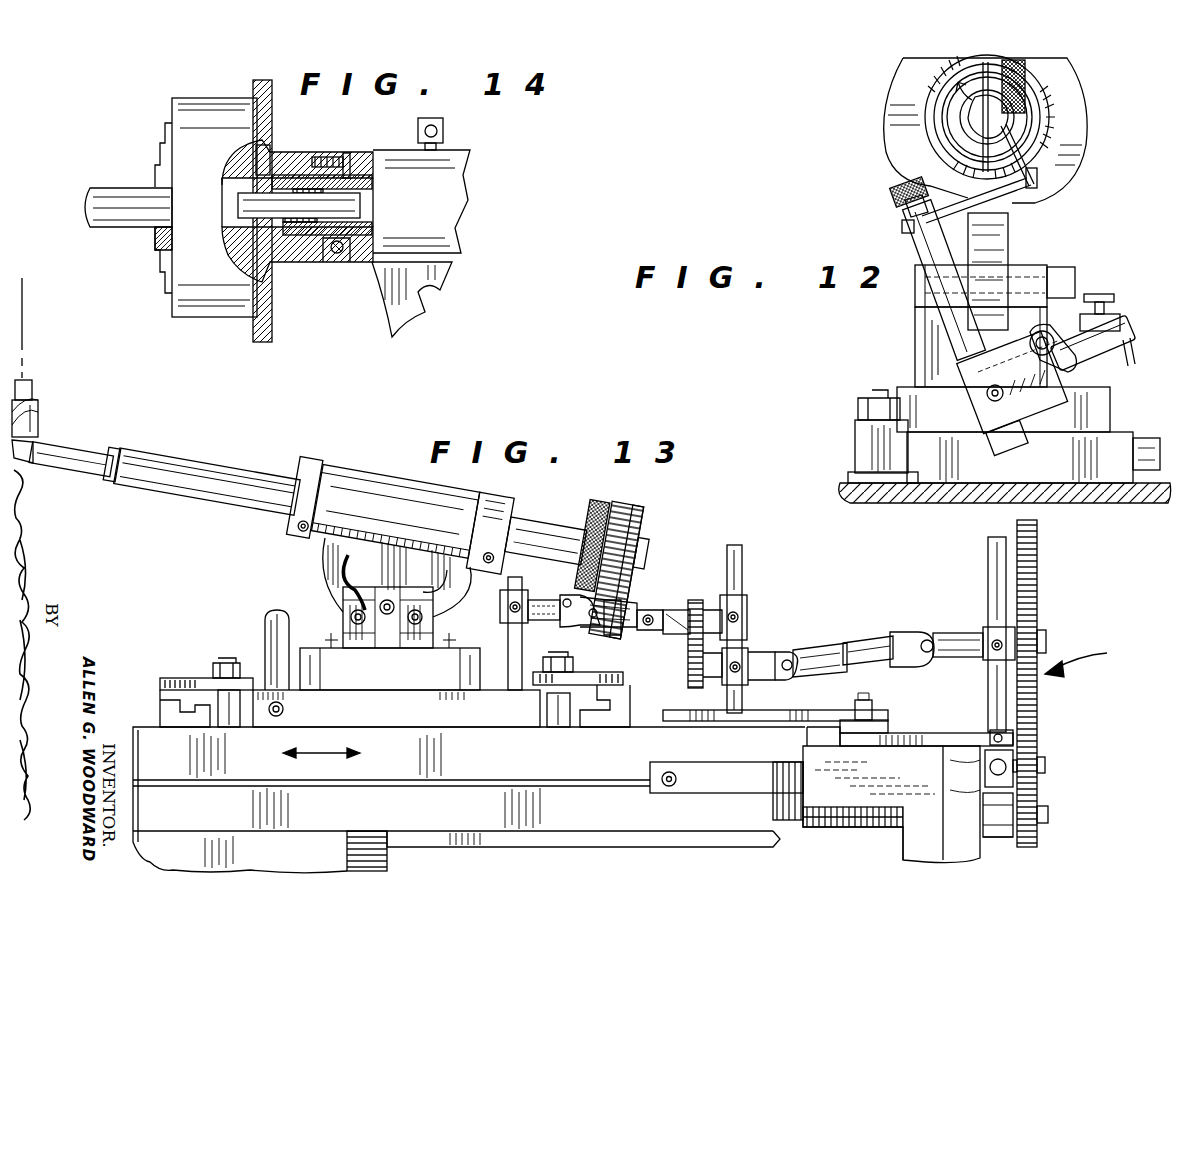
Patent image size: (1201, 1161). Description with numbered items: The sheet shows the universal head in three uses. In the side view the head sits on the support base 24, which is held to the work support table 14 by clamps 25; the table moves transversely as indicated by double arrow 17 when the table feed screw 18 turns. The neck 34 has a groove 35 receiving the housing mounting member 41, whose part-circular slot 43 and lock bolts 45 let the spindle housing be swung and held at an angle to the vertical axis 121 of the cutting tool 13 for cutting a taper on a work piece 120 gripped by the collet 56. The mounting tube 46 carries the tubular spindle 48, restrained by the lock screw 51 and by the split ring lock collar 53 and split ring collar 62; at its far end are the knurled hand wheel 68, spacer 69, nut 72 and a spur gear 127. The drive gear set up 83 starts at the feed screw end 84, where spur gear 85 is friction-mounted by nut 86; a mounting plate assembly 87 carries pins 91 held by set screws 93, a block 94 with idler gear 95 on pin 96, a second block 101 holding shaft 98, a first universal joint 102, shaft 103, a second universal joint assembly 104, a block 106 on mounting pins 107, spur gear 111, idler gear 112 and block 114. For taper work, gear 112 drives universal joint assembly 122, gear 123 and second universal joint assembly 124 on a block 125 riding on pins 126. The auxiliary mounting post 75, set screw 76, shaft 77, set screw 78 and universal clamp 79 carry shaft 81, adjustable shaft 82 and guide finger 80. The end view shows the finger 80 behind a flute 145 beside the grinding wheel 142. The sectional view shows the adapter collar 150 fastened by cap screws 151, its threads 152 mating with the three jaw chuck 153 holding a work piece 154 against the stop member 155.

In FIG. 13, the cutting tool 13 is at (40, 410).
In FIG. 13, the work support table 14 is at (143, 735).
In FIG. 13, the double arrow 17 is at (313, 755).
In FIG. 13, the table feed screw 18 is at (860, 823).
In FIG. 13, the support base 24 is at (465, 687).
In FIG. 13, the clamps 25 is at (196, 690).
In FIG. 12, the neck 34 is at (925, 309).
In FIG. 13, the neck 34 is at (378, 648).
In FIG. 12, the groove 35 is at (1041, 262).
In FIG. 14, the housing mounting member 41 is at (425, 270).
In FIG. 12, the housing mounting member 41 is at (1012, 222).
In FIG. 13, the housing mounting member 41 is at (327, 543).
In FIG. 13, the part-circular slot 43 is at (349, 555).
In FIG. 13, the lock bolts 45 is at (350, 618).
In FIG. 14, the mounting tube 46 is at (465, 163).
In FIG. 13, the mounting tube 46 is at (368, 468).
In FIG. 14, the tubular spindle 48 is at (395, 182).
In FIG. 13, the tubular spindle 48 is at (212, 462).
In FIG. 14, the lock screw 51 is at (445, 122).
In FIG. 14, the split ring lock collar 53 is at (349, 153).
In FIG. 13, the split ring lock collar 53 is at (311, 460).
In FIG. 13, the collet 56 is at (113, 446).
In FIG. 13, the split ring collar 62 is at (503, 496).
In FIG. 13, the knurled hand wheel 68 is at (583, 510).
In FIG. 13, the spacer 69 is at (621, 503).
In FIG. 13, the nut 72 is at (638, 540).
In FIG. 12, the auxiliary attachment mounting post 75 is at (1125, 320).
In FIG. 13, the auxiliary attachment mounting post 75 is at (270, 622).
In FIG. 13, the set screw 76 is at (300, 709).
In FIG. 12, the shaft 77 is at (1034, 335).
In FIG. 12, the set screw 78 is at (1102, 294).
In FIG. 12, the universal clamp 79 is at (1043, 405).
In FIG. 12, the guide finger 80 is at (1043, 156).
In FIG. 12, the shaft 81 is at (963, 324).
In FIG. 12, the adjustable shaft 82 is at (920, 183).
In FIG. 13, the quick change drive gear set up 83 is at (1090, 659).
In FIG. 13, the end of table feed screw 84 is at (1008, 838).
In FIG. 13, the spur gear 85 is at (1037, 800).
In FIG. 13, the nut 86 is at (1048, 823).
In FIG. 13, the mounting plate assembly 87 is at (910, 731).
In FIG. 13, the pins 91 is at (990, 567).
In FIG. 13, the set screws 93 is at (990, 740).
In FIG. 13, the block 94 is at (1013, 753).
In FIG. 13, the idler gear 95 is at (1045, 763).
In FIG. 13, the pin 96 is at (1046, 770).
In FIG. 13, the shaft 98 is at (1038, 615).
In FIG. 13, the second block 101 is at (987, 663).
In FIG. 13, the first universal joint 102 is at (936, 630).
In FIG. 13, the shaft 103 is at (870, 645).
In FIG. 13, the second universal joint assembly 104 is at (797, 648).
In FIG. 13, the block 106 is at (750, 647).
In FIG. 13, the mounting pins 107 is at (742, 558).
In FIG. 13, the spur gear 111 is at (690, 687).
In FIG. 13, the idler gear 112 is at (697, 600).
In FIG. 13, the block 114 is at (748, 599).
In FIG. 13, the work piece 120 is at (78, 464).
In FIG. 13, the vertical axis 121 is at (24, 337).
In FIG. 13, the universal joint assembly 122 is at (640, 610).
In FIG. 13, the gear 123 is at (605, 637).
In FIG. 13, the second universal joint assembly 124 is at (558, 618).
In FIG. 13, the block 125 is at (524, 582).
In FIG. 13, the pins 126 is at (507, 660).
In FIG. 13, the spur gear 127 is at (637, 503).
In FIG. 12, the grinding wheel 142 is at (1020, 78).
In FIG. 12, the flute 145 is at (1010, 115).
In FIG. 14, the adapter collar 150 is at (312, 257).
In FIG. 14, the cap screws 151 is at (334, 156).
In FIG. 14, the threads 152 is at (262, 158).
In FIG. 14, the three jaw chuck 153 is at (190, 104).
In FIG. 14, the work piece 154 is at (145, 213).
In FIG. 14, the stop member 155 is at (355, 204).